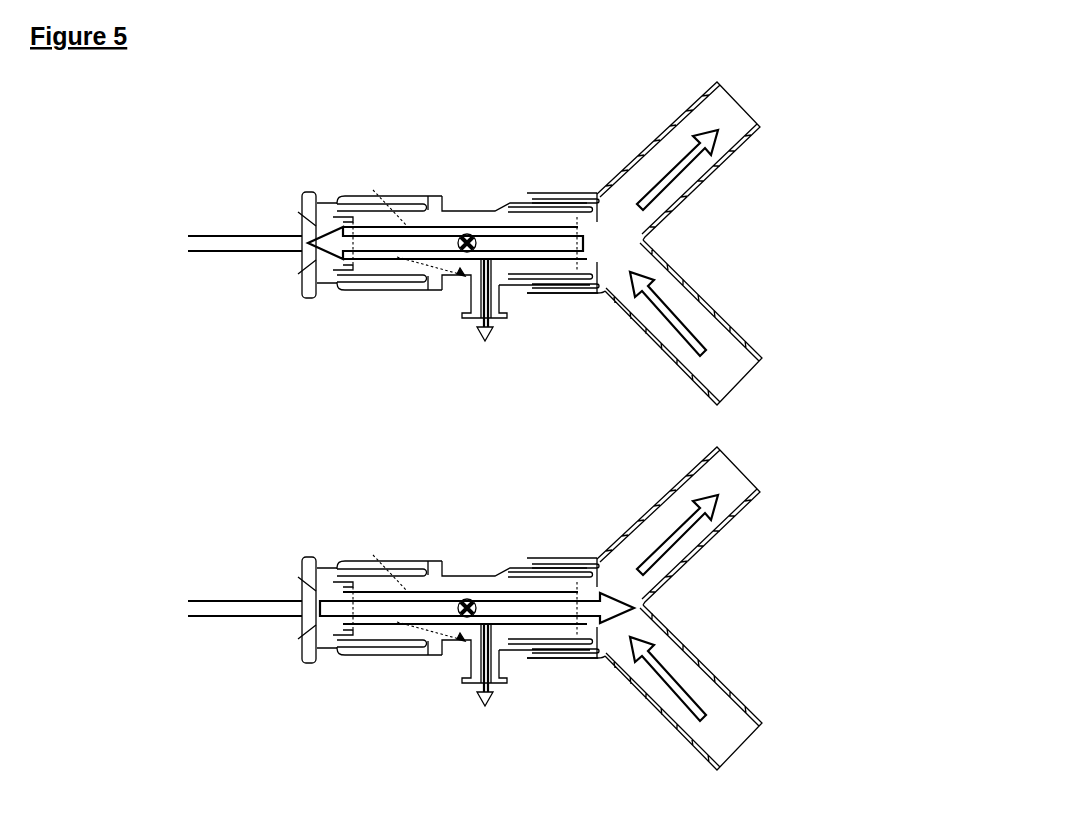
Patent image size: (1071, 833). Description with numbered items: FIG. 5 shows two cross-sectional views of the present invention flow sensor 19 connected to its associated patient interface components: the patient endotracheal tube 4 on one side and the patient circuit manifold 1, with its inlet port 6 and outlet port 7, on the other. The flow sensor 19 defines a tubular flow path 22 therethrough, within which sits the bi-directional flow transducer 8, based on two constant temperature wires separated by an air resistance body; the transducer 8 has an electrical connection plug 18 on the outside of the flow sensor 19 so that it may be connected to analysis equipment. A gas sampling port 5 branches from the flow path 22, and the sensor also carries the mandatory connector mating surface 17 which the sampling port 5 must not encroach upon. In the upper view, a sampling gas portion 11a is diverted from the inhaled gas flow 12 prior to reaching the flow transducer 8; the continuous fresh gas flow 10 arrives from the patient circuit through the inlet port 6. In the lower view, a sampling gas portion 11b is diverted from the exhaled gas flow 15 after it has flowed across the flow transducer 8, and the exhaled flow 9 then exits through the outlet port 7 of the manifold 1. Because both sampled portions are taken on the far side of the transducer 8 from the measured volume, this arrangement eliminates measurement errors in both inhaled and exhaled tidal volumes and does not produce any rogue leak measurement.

The patient circuit manifold 1 is at (622, 166).
The patient endotracheal tube 4 is at (248, 234).
The gas sampling port 5 is at (460, 300).
The inlet port 6 is at (742, 392).
The outlet port 7 is at (747, 104).
The flow transducer 8 is at (463, 213).
The exhaled flow 9 is at (690, 168).
The continuous fresh gas flow 10 is at (683, 308).
The sampling gas portion 11a is at (482, 334).
The sampling gas portion 11b is at (431, 680).
The inhaled gas flow 12 is at (300, 206).
The exhaled gas flow 15 is at (294, 568).
The connector mating surface 17 is at (518, 294).
The electrical connection plug 18 is at (467, 233).
The flow sensor 19 is at (493, 208).
The flow path 22 is at (345, 193).